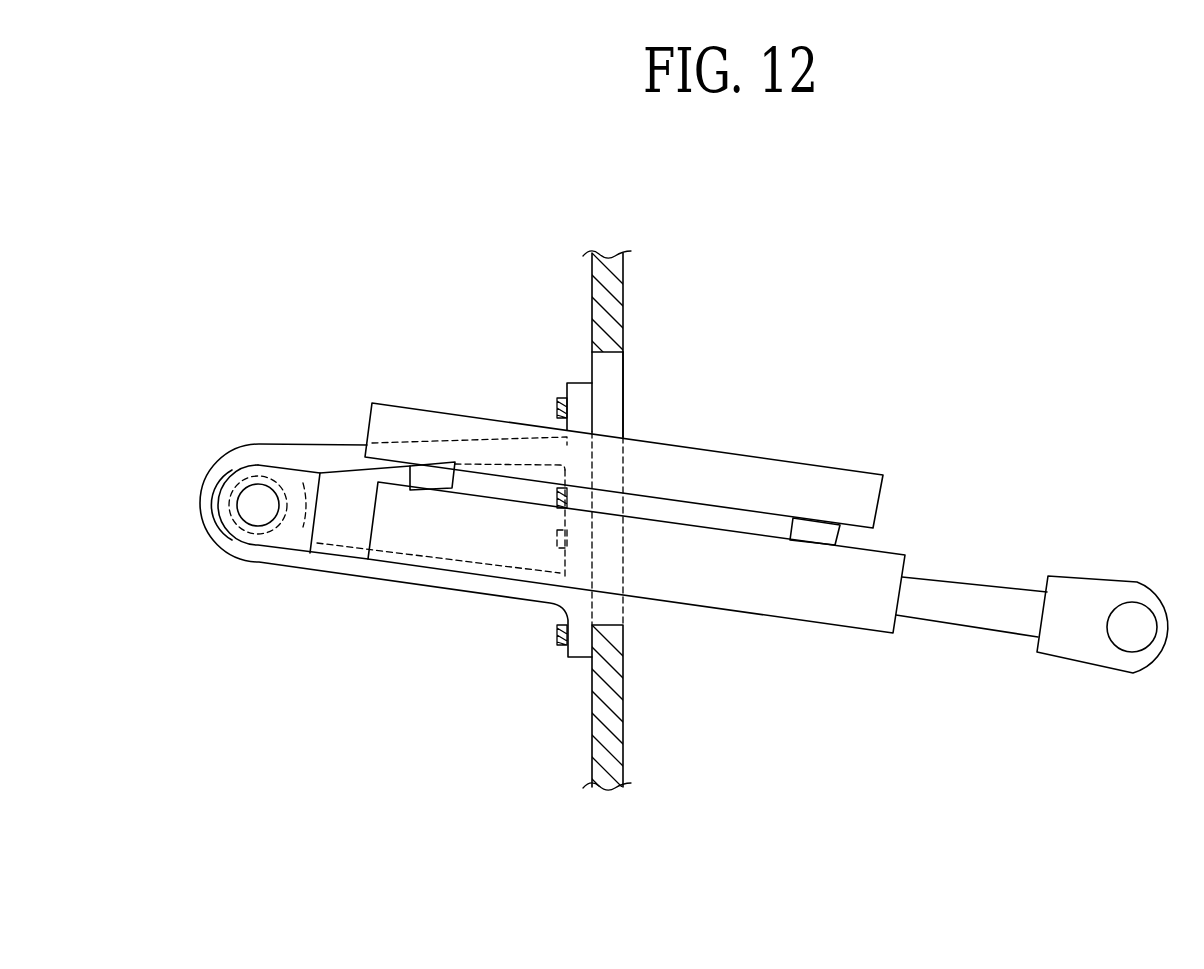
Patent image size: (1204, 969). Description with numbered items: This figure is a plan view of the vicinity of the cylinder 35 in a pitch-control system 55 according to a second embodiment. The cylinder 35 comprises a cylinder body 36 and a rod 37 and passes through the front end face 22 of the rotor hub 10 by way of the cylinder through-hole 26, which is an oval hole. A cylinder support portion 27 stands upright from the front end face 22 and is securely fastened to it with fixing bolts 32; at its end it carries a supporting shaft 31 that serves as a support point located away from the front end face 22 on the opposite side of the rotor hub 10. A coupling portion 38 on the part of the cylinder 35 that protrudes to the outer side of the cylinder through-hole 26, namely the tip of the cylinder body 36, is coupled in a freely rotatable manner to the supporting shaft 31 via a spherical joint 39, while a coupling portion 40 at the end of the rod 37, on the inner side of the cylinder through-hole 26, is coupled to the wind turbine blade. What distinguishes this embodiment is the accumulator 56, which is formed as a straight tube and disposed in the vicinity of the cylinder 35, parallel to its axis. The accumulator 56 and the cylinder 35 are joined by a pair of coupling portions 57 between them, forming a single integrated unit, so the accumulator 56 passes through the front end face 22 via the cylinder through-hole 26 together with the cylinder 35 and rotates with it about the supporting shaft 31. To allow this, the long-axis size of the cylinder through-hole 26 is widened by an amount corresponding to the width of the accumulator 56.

The rotor hub 10 is at (516, 520).
The front end face 22 is at (590, 285).
The cylinder through-hole 26 is at (607, 353).
The cylinder support portion 27 is at (323, 441).
The supporting shaft 31 is at (257, 505).
The fixing bolt 32 is at (557, 632).
The cylinder 35 is at (707, 662).
The cylinder body 36 is at (790, 627).
The rod 37 is at (957, 622).
The coupling portion 38 is at (230, 535).
The spherical joint 39 is at (285, 550).
The coupling portion 40 is at (1137, 575).
The pitch-control system 55 is at (298, 242).
The accumulator 56 is at (735, 450).
The coupling portion 57 is at (460, 484).